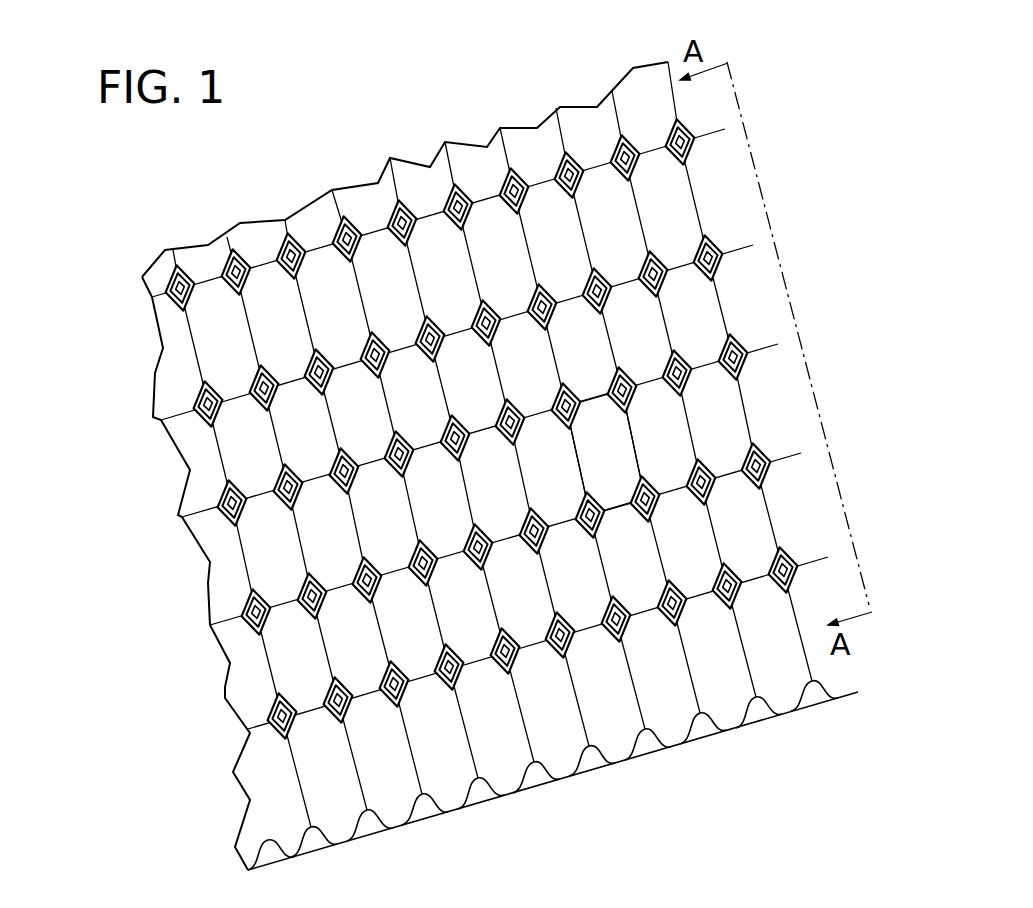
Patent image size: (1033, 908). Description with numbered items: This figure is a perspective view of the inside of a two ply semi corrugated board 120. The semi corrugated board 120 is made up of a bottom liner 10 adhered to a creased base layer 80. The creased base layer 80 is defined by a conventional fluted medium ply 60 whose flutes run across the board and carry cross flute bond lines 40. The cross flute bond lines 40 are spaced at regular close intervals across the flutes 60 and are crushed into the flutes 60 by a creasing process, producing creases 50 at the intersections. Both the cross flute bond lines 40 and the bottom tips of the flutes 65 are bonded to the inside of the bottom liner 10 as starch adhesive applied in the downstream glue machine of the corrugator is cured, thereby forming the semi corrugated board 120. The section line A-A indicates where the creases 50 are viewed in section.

The bottom liner 10 is at (690, 742).
The cross flute bond lines 40 is at (618, 275).
The creases 50 is at (695, 125).
The fluted medium ply 60 is at (608, 562).
The bottom tips of the flutes 65 is at (613, 765).
The creased base layer 80 is at (610, 457).
The semi corrugated board 120 is at (250, 693).